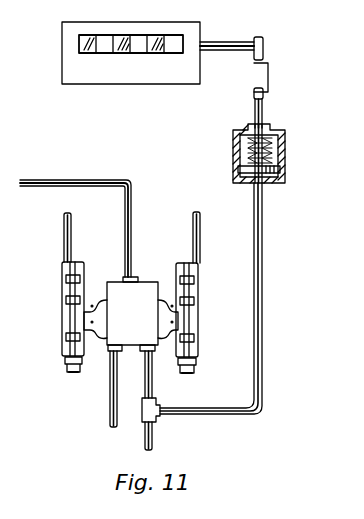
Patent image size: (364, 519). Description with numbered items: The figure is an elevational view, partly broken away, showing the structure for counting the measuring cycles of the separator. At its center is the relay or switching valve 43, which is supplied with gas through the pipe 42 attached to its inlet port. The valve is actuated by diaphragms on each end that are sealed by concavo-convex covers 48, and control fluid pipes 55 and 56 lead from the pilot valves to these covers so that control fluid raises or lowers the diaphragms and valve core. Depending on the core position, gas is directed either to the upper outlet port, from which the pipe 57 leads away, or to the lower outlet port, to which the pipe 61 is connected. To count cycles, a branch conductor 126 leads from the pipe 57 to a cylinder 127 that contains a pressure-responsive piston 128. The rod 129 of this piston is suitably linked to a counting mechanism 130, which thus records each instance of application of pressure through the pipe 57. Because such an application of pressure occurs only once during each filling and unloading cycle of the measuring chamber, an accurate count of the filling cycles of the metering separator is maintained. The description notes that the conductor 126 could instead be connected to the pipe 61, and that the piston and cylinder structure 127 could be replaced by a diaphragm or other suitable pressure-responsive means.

The counting mechanism 130 is at (143, 78).
The rod 129 is at (255, 105).
The pressure-responsive piston 128 is at (240, 172).
The cylinder 127 is at (285, 168).
The branch conductor 126 is at (259, 383).
The pipe 42 is at (80, 181).
The relay or switching valve 43 is at (137, 312).
The concavo-convex covers 48 is at (62, 308).
The control fluid pipe 56 is at (64, 232).
The control fluid pipe 55 is at (202, 234).
The pipe 61 is at (110, 391).
The pipe 57 is at (153, 396).